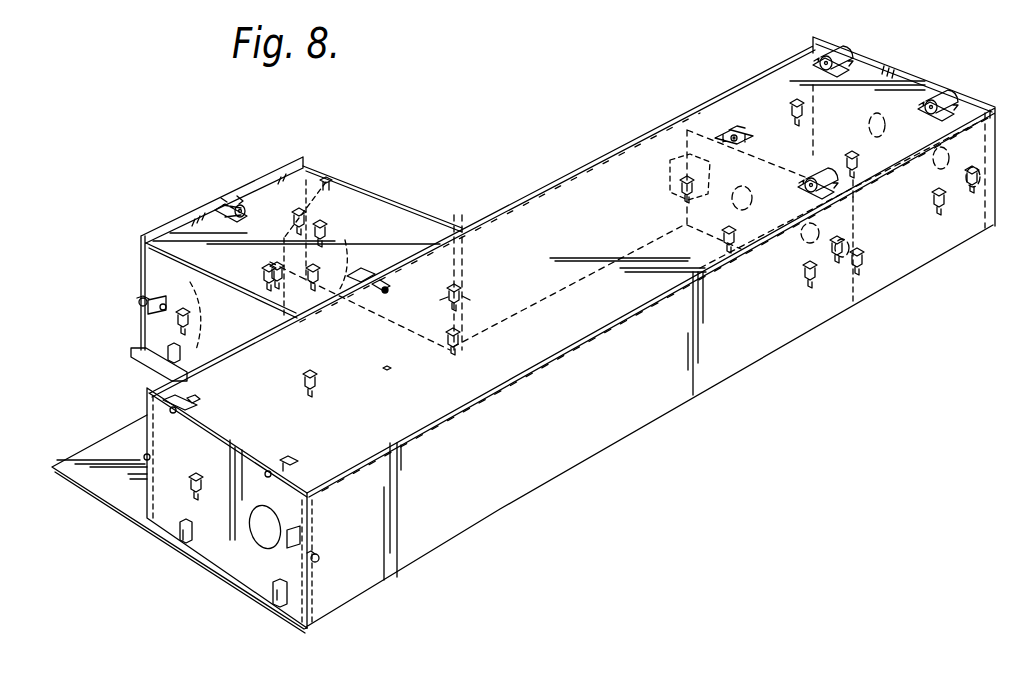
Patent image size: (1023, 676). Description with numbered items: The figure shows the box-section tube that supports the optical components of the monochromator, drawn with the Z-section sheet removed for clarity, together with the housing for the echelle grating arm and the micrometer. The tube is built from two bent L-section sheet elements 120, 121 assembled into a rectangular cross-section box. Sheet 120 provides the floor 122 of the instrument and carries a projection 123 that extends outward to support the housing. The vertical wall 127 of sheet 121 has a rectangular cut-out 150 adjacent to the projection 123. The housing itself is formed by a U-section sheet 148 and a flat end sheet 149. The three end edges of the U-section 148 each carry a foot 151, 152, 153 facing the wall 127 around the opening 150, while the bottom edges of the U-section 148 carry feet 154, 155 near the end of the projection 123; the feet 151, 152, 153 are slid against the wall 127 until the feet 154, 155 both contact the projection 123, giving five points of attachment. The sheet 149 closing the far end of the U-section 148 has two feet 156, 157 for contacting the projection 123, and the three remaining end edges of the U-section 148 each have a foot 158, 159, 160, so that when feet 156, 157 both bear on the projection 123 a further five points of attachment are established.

The bent L-section sheet element 120 is at (105, 485).
The bent L-section sheet element 121 is at (603, 178).
The floor 122 is at (560, 450).
The projection 123 is at (140, 357).
The vertical wall 127 is at (462, 240).
The U-section sheet 148 is at (363, 212).
The flat end sheet 149 is at (272, 175).
The rectangular cut-out 150 is at (386, 374).
The foot 151 is at (320, 378).
The foot 152 is at (370, 297).
The foot 153 is at (473, 299).
The foot 154 is at (201, 335).
The foot 155 is at (342, 231).
The foot 156 is at (198, 297).
The foot 157 is at (280, 215).
The foot 158 is at (138, 304).
The foot 159 is at (217, 208).
The foot 160 is at (324, 186).